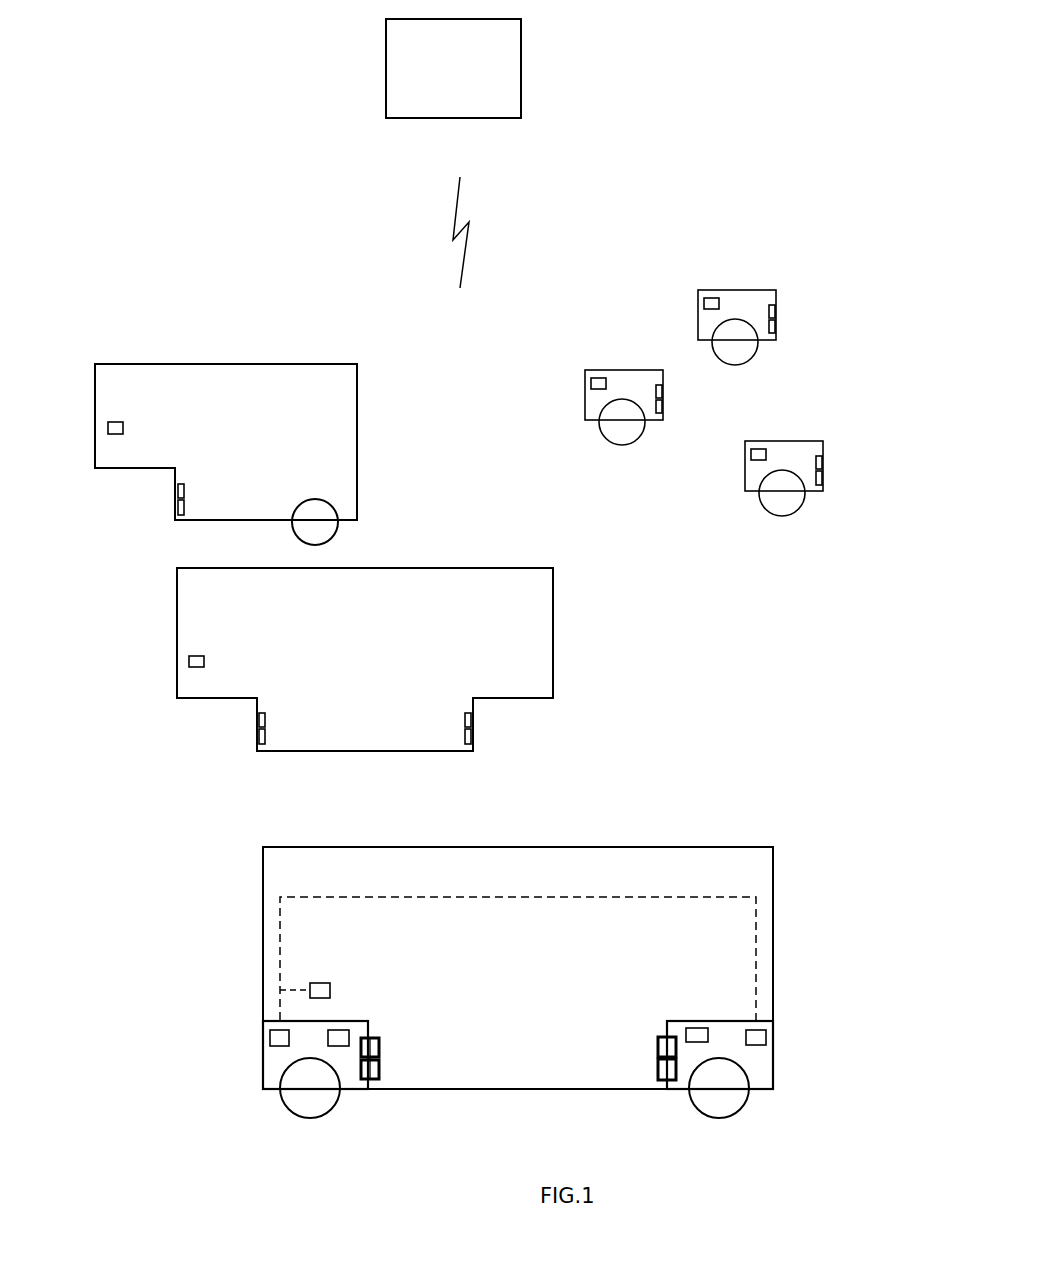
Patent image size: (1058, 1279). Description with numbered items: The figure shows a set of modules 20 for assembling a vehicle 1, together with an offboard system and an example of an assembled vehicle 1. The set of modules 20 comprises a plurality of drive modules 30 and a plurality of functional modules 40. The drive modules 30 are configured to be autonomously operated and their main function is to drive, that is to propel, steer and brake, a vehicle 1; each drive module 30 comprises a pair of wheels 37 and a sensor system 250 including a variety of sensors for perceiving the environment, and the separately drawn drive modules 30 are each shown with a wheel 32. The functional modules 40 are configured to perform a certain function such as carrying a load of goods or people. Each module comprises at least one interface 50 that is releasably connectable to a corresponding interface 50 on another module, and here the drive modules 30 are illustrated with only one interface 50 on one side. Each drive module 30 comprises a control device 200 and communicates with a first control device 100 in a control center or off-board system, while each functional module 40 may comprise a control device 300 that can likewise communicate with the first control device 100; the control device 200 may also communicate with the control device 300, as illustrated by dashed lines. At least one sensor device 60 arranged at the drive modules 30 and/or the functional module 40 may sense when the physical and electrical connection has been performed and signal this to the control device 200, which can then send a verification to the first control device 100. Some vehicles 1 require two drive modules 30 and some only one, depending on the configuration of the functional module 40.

The vehicle 1 is at (727, 812).
The set of modules 20 is at (369, 290).
The drive module 30 is at (735, 290).
The cart wheel 32 is at (753, 353).
The wheels 37 is at (308, 1118).
The functional module 40 is at (357, 458).
The interface 50 is at (178, 488).
The sensor device 60 is at (178, 510).
The first control device 100 is at (453, 68).
The control device 200 is at (704, 301).
The sensor system 250 is at (349, 1033).
The control device 300 is at (109, 422).